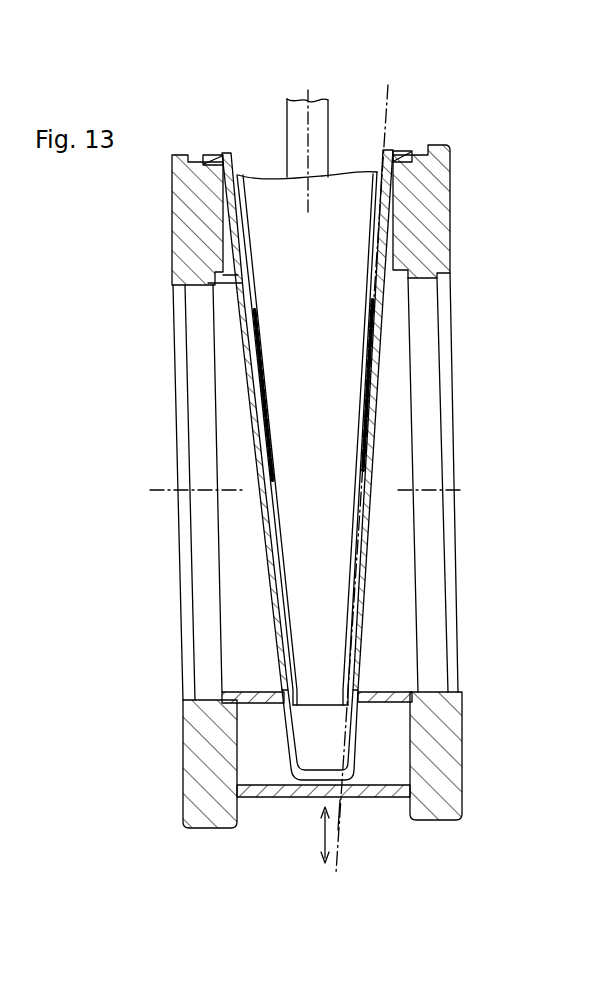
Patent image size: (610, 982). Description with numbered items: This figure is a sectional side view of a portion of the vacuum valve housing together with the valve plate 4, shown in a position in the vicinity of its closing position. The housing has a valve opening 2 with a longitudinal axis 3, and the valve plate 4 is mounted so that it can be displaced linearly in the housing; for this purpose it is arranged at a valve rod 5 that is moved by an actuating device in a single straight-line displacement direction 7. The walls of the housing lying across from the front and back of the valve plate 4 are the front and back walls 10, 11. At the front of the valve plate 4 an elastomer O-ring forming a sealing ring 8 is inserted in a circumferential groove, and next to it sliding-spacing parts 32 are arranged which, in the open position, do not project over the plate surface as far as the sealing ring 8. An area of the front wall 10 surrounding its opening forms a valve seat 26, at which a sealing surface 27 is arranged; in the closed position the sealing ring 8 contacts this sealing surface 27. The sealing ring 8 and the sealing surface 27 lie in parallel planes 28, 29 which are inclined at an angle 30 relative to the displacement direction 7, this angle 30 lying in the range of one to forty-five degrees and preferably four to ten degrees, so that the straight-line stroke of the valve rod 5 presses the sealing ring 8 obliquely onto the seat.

The valve opening 2 is at (423, 392).
The longitudinal axis 3 is at (167, 490).
The valve plate 4 is at (291, 655).
The valve rod 5 is at (318, 133).
The displacement direction 7 is at (323, 833).
The sealing ring 8 is at (373, 217).
The front wall 10 is at (388, 183).
The back wall 11 is at (232, 223).
The valve seat 26 is at (336, 719).
The sealing surface 27 is at (344, 732).
The plane 28 is at (345, 827).
The plane 29 is at (347, 810).
The angle 30 is at (332, 842).
The sliding-spacing parts 32 is at (362, 445).